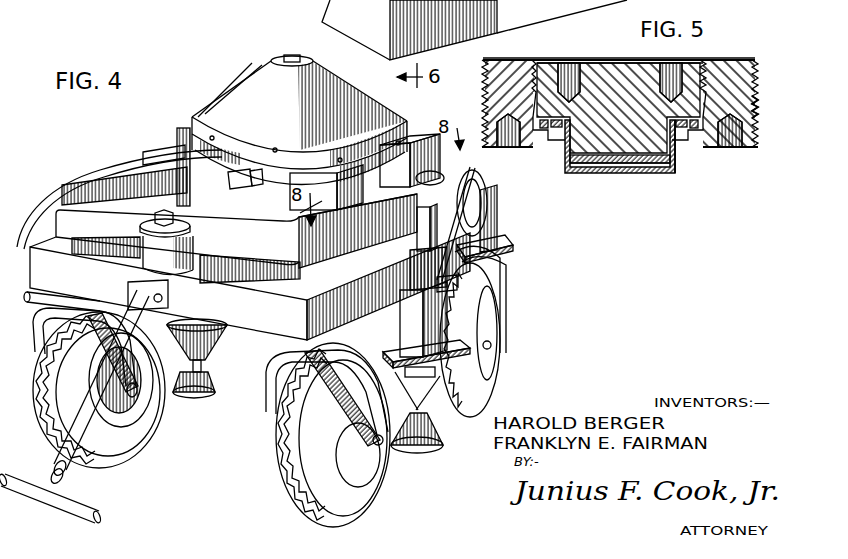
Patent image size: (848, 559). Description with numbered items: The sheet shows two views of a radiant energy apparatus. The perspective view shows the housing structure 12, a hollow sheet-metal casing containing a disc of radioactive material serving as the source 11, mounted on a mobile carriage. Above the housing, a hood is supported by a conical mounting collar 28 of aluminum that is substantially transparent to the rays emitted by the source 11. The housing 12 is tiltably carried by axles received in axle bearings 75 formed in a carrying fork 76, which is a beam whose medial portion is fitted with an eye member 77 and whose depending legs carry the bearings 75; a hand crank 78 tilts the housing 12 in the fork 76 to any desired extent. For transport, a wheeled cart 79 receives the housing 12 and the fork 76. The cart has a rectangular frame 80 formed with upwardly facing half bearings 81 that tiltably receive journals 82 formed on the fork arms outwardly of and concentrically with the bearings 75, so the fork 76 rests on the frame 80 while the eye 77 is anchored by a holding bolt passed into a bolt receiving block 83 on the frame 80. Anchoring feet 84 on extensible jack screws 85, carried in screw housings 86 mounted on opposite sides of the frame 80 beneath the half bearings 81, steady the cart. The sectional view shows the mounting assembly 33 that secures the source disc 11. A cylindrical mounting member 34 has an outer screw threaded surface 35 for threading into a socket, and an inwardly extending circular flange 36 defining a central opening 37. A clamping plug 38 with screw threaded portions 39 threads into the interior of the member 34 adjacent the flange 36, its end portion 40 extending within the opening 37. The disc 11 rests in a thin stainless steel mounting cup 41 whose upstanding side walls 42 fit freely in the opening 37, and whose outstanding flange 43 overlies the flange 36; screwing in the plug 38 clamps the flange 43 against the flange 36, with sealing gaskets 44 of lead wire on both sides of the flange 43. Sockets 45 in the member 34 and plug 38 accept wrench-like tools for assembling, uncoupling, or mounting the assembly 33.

In FIG. 5, the source disc 11 is at (620, 174).
In FIG. 4, the housing structure 12 is at (284, 120).
In FIG. 4, the conical mounting collar 28 is at (230, 84).
In FIG. 5, the mounting assembly 33 is at (722, 50).
In FIG. 5, the cylindrical mounting member 34 is at (733, 77).
In FIG. 5, the outer screw threaded surface 35 is at (753, 110).
In FIG. 5, the circular flange 36 is at (552, 142).
In FIG. 5, the central opening 37 is at (677, 160).
In FIG. 5, the clamping plug 38 is at (610, 90).
In FIG. 5, the screw threaded portions 39 is at (530, 82).
In FIG. 5, the end portion 40 is at (642, 143).
In FIG. 5, the mounting cup 41 is at (597, 167).
In FIG. 5, the side walls 42 is at (568, 134).
In FIG. 5, the flange or lug means 43 is at (548, 141).
In FIG. 5, the sealing gaskets 44 is at (690, 134).
In FIG. 5, the sockets 45 is at (570, 73).
In FIG. 4, the axle bearings 75 is at (163, 145).
In FIG. 4, the carrying fork 76 is at (345, 248).
In FIG. 4, the eye member 77 is at (143, 230).
In FIG. 4, the hand crank 78 is at (495, 268).
In FIG. 4, the wheeled cart 79 is at (262, 411).
In FIG. 4, the frame 80 is at (248, 313).
In FIG. 4, the half bearings 81 is at (416, 222).
In FIG. 4, the journals 82 is at (485, 212).
In FIG. 4, the bolt receiving block 83 is at (194, 248).
In FIG. 4, the anchoring feet 84 is at (193, 403).
In FIG. 4, the extensible jack screws 85 is at (210, 368).
In FIG. 4, the screw housings 86 is at (410, 328).